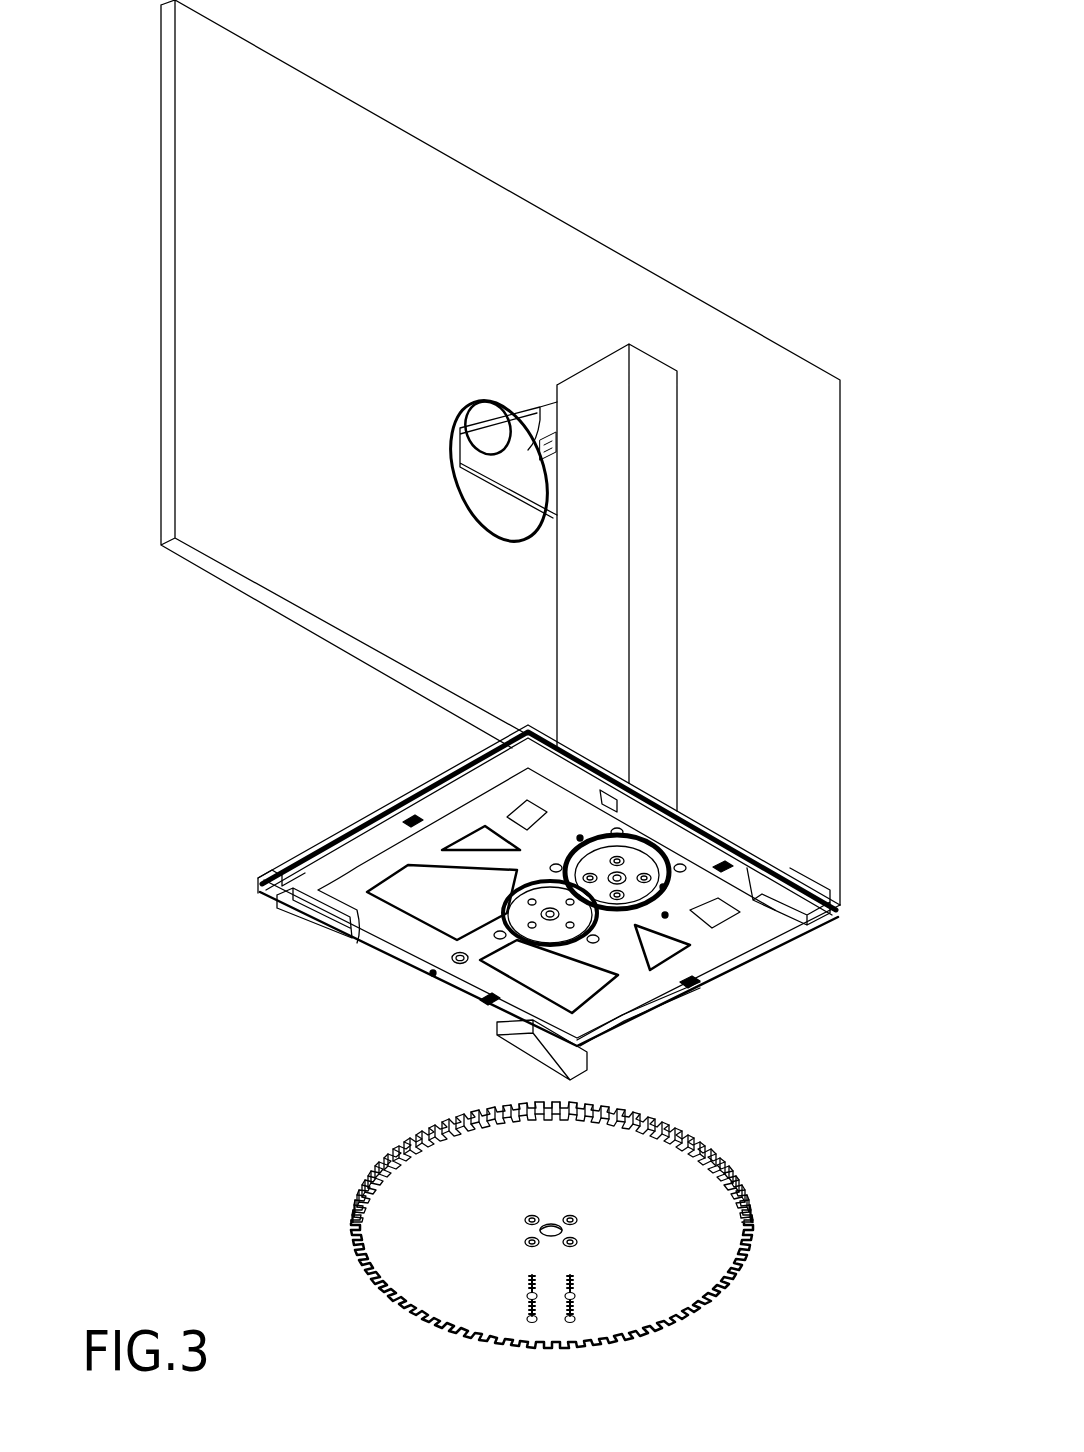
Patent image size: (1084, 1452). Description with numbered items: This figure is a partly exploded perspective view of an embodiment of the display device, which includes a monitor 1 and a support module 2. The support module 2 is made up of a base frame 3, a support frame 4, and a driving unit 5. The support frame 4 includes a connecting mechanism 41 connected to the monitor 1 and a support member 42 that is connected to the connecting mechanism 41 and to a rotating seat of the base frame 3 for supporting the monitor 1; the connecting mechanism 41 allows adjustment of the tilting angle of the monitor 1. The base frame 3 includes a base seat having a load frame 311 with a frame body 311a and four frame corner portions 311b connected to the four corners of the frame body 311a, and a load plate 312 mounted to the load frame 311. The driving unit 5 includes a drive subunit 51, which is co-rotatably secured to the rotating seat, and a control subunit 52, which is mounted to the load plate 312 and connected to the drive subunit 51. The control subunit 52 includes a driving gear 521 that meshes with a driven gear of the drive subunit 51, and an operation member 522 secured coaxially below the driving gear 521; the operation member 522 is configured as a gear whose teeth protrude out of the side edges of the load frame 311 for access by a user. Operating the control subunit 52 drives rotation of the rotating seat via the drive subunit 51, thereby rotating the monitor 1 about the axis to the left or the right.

The monitor 1 is at (528, 200).
The support module 2 is at (877, 672).
The base frame 3 is at (813, 870).
The support frame 4 is at (672, 205).
The connecting mechanism 41 is at (548, 436).
The support member 42 is at (647, 378).
The load frame 311 is at (153, 905).
The frame body 311a is at (320, 873).
The frame corner portions 311b is at (302, 915).
The load plate 312 is at (410, 950).
The drive subunit 51 is at (672, 887).
The control subunit 52 is at (370, 1090).
The driving gear 521 is at (548, 930).
The operation member 522 is at (440, 1175).
The driving unit 5 is at (621, 1213).